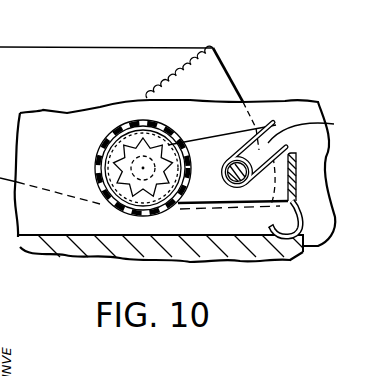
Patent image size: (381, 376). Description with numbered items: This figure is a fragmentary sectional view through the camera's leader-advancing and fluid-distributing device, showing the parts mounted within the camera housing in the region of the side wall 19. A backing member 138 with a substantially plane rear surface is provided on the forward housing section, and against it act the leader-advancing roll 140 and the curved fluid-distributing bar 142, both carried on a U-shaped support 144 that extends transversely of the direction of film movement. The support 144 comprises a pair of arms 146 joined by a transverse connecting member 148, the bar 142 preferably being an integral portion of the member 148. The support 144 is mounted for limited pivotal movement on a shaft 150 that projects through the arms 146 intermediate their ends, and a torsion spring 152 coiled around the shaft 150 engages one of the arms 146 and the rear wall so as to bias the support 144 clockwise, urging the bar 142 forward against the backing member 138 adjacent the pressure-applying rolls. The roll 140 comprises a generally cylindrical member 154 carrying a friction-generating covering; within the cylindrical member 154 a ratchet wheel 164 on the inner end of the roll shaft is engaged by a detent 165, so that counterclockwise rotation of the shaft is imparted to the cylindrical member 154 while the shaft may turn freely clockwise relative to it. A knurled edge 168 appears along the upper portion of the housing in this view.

The housing 19 is at (43, 110).
The backing member 138 is at (305, 251).
The leader-advancing roll 140 is at (99, 147).
The fluid-distributing bar 142 is at (304, 228).
The U-shaped support 144 is at (219, 130).
The arms 146 is at (216, 203).
The transverse connecting member 148 is at (297, 168).
The shaft 150 is at (315, 129).
The torsion spring 152 is at (283, 100).
The cylindrical member 154 is at (166, 205).
The ratchet wheel 164 is at (170, 136).
The detent 165 is at (116, 207).
The knurled edge 168 is at (183, 72).